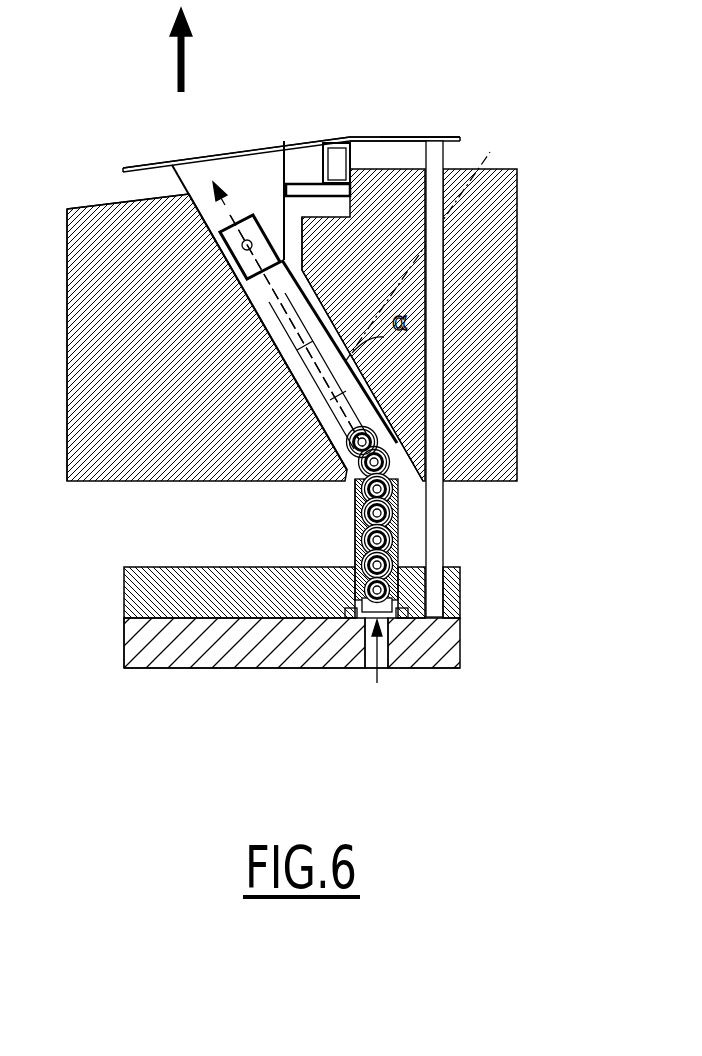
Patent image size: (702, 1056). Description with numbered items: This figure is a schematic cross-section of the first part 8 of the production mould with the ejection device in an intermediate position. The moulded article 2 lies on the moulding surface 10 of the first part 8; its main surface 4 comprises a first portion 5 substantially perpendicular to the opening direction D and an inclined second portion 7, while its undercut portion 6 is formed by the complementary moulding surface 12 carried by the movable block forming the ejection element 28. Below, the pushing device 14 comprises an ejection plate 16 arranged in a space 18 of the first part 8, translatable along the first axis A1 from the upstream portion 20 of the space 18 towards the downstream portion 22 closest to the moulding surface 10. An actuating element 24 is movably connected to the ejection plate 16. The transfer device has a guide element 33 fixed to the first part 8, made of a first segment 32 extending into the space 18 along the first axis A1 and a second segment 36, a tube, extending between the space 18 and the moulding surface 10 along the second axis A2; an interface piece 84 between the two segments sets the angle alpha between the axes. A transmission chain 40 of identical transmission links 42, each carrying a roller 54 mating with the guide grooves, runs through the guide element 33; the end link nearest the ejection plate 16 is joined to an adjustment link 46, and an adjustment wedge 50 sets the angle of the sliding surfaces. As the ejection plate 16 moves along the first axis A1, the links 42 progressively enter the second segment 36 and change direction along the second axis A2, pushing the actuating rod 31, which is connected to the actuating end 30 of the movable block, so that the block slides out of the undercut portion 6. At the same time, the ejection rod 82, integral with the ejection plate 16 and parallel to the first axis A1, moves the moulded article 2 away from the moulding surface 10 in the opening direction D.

The moulded article 2 is at (235, 156).
The main surface 4 is at (322, 142).
The first portion 5 is at (388, 137).
The undercut portion 6 is at (352, 153).
The second portion 7 is at (200, 160).
The first part 8 is at (99, 635).
The moulding surface 10 is at (120, 195).
The complementary moulding surface 12 is at (325, 157).
The pushing device 14 is at (280, 548).
The ejection plate 16 is at (243, 640).
The space 18 is at (176, 549).
The upstream portion 20 is at (180, 690).
The downstream portion 22 is at (120, 490).
The actuating element 24 is at (350, 587).
The ejection element 28 is at (200, 232).
The actuating end 30 is at (268, 232).
The actuating rod 31 is at (303, 357).
The first segment 32 is at (393, 520).
The guide element 33 is at (418, 403).
The second segment 36 is at (434, 280).
The transmission chain 40 is at (355, 517).
The transmission links 42 is at (358, 550).
The adjustment link 46 is at (460, 577).
The adjustment wedge 50 is at (415, 597).
The roller 54 is at (397, 499).
The ejection rod 82 is at (517, 207).
The interface piece 84 is at (445, 447).
The first axis A1 is at (380, 655).
The second axis A2 is at (382, 253).
The opening direction D is at (167, 50).